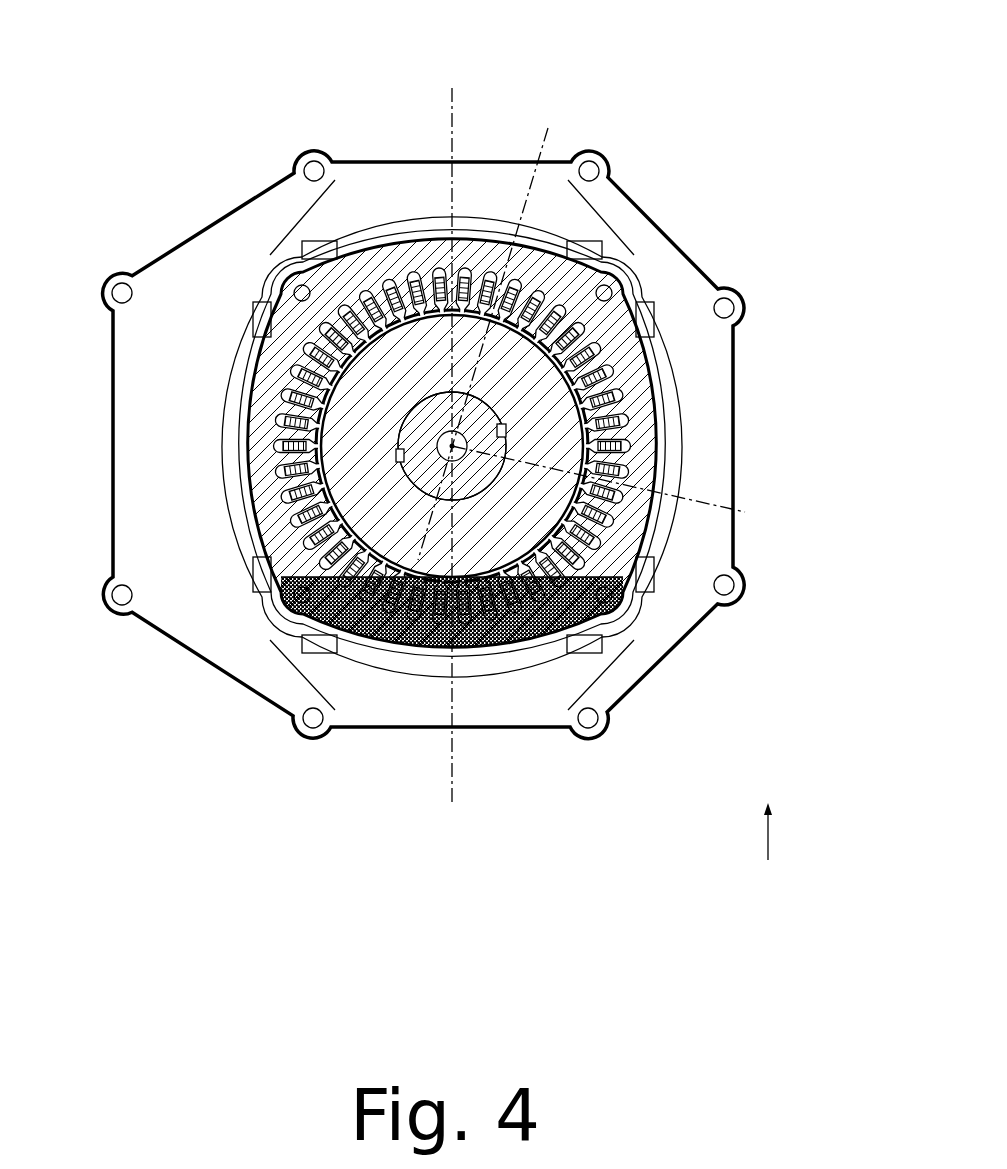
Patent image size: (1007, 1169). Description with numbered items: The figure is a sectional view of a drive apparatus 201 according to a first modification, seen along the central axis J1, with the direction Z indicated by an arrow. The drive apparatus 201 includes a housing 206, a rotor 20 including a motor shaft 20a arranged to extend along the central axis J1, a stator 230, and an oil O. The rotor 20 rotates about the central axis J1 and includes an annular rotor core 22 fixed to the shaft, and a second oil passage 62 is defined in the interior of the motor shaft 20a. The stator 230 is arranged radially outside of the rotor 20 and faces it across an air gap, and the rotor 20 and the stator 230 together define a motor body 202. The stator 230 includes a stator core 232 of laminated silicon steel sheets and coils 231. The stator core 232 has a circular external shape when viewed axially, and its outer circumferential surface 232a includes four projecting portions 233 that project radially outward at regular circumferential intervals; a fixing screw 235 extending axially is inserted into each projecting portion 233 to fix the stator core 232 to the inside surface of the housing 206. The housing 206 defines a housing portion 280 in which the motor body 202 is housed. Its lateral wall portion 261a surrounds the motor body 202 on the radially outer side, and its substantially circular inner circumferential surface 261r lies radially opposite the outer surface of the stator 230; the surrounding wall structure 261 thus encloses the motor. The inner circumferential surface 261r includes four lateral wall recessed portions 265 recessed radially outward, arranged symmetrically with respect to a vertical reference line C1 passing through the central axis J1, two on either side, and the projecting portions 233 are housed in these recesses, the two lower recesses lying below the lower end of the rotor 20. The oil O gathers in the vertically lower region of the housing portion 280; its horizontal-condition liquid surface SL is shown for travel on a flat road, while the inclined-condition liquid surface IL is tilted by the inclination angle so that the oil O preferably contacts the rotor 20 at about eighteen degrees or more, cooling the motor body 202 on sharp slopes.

The drive apparatus 201 is at (586, 103).
The motor body 202 is at (472, 229).
The housing 206 is at (214, 210).
The stator 230 is at (413, 446).
The coils 231 is at (300, 290).
The stator core 232 is at (392, 243).
The outer circumferential surface 232a is at (352, 262).
The projecting portions 233 is at (626, 300).
The fixing screw 235 is at (618, 280).
The bearing holder 261 is at (256, 332).
The lateral wall portion 261a is at (255, 318).
The inner circumferential surface 261r is at (278, 393).
The lateral wall recessed portions 265 is at (606, 287).
The housing portion 280 is at (553, 251).
The rotor 20 is at (558, 446).
The rotor core 22 is at (552, 443).
The motor shaft 20a is at (503, 464).
The second oil passage 62 is at (415, 600).
The reference line C1 is at (452, 95).
The central axis J1 is at (486, 330).
The inclined-condition liquid surface IL is at (745, 512).
The horizontal-condition liquid surface SL is at (620, 597).
The oil O is at (460, 455).
The axial direction Z is at (768, 817).